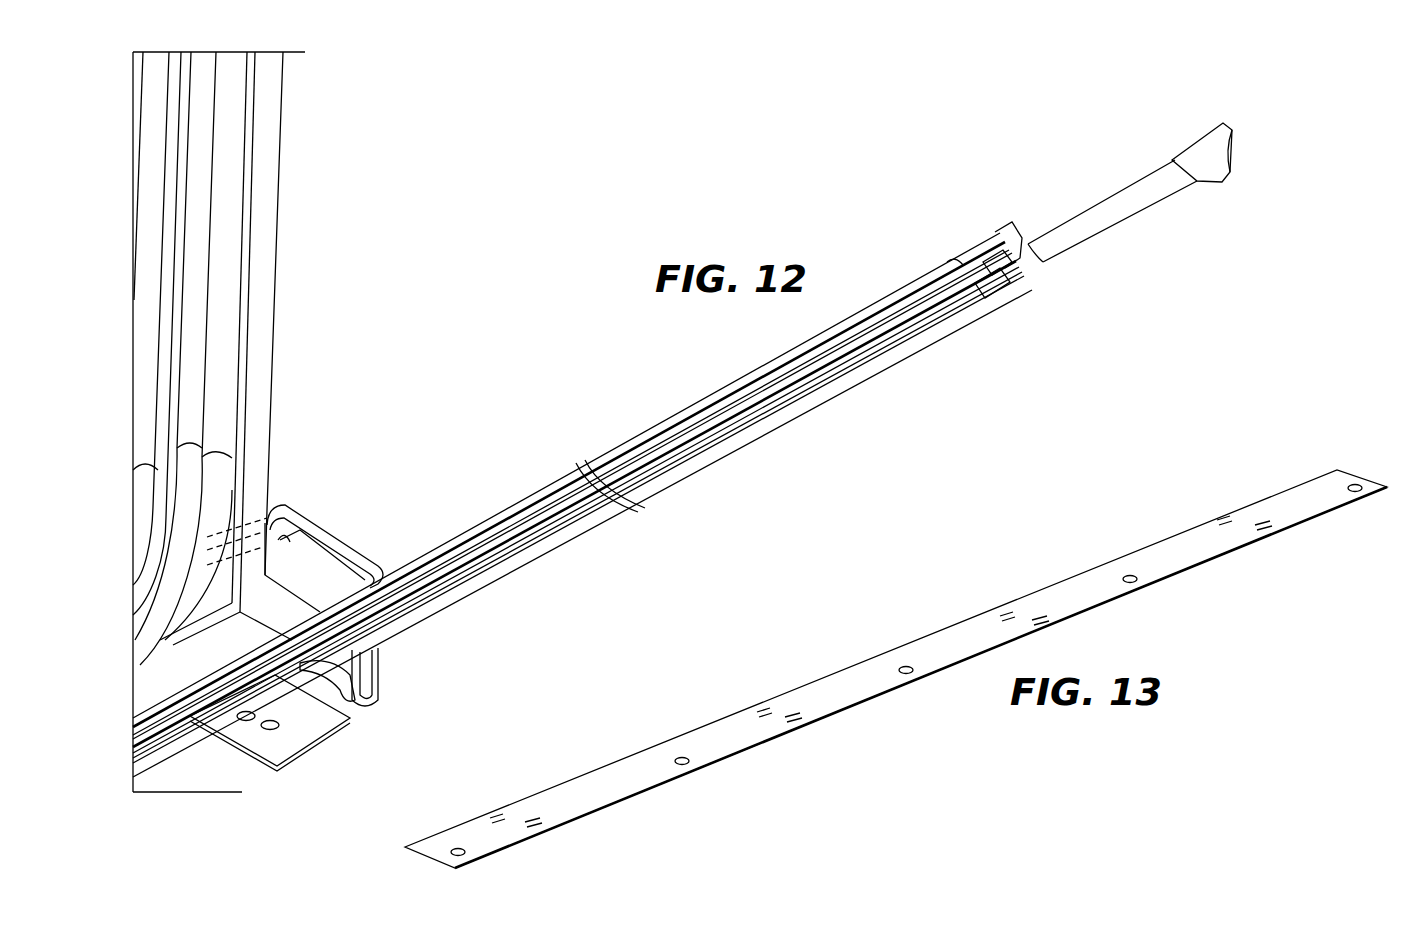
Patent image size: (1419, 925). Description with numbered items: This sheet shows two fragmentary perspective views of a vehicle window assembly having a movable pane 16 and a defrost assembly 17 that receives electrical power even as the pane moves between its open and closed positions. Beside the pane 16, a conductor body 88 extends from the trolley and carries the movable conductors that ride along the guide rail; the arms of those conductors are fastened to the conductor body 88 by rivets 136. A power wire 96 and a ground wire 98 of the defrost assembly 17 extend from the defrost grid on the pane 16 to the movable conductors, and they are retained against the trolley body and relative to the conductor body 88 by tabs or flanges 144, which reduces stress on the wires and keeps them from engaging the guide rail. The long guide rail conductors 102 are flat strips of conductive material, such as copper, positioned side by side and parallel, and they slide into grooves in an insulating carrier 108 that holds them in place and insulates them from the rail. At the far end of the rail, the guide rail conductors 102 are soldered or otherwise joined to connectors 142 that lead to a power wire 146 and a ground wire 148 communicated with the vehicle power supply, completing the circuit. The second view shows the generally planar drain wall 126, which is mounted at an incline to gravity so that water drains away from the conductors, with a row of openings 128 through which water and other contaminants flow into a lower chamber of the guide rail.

In FIG. 12, the movable pane 16 is at (285, 215).
In FIG. 12, the defrost assembly 17 is at (386, 556).
In FIG. 12, the conductor body 88 is at (307, 712).
In FIG. 12, the power wire 96 is at (303, 540).
In FIG. 12, the ground wire 98 is at (310, 525).
In FIG. 12, the guide rail conductors 102 is at (943, 312).
In FIG. 12, the carrier 108 is at (1007, 227).
In FIG. 13, the drain wall 126 is at (1040, 588).
In FIG. 13, the openings 128 is at (459, 848).
In FIG. 12, the rivets 136 is at (270, 730).
In FIG. 12, the connectors 142 is at (945, 258).
In FIG. 12, the tabs or flanges 144 is at (382, 660).
In FIG. 12, the power wire 146 is at (1132, 210).
In FIG. 12, the ground wire 148 is at (1137, 182).